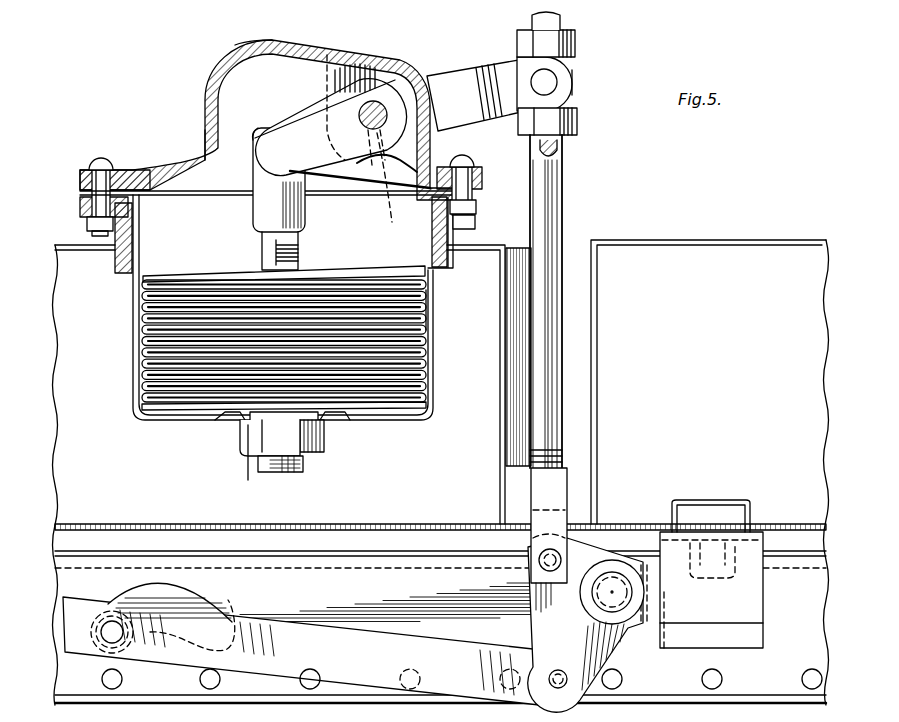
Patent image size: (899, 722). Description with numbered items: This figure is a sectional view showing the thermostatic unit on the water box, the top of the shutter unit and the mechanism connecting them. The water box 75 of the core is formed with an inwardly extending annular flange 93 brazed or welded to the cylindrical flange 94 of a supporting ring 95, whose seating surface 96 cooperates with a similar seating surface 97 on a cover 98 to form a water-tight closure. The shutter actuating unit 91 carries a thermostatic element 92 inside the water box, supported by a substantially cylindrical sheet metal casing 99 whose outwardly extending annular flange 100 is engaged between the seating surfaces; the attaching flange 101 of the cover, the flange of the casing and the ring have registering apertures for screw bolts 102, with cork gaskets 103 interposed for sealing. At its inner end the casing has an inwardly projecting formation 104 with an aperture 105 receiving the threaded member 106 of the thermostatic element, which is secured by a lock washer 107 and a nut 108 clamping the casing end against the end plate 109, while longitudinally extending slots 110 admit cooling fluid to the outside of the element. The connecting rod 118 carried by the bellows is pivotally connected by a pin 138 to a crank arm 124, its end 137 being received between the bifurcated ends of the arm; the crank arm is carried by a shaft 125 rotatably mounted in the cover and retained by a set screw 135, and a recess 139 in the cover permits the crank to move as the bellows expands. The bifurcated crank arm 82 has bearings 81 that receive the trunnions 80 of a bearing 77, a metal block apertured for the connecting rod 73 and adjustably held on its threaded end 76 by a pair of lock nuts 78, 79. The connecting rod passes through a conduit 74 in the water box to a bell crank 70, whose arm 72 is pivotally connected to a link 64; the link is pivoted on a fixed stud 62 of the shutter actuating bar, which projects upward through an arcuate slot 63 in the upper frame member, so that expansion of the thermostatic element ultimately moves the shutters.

The fixed stud 62 is at (112, 630).
The arcuate slot 63 is at (188, 593).
The link 64 is at (400, 645).
The bell crank 70 is at (566, 603).
The arm of bell crank 72 is at (590, 690).
The connecting rod 73 is at (562, 222).
The conduit 74 is at (610, 380).
The water box 75 is at (735, 240).
The threaded end 76 is at (557, 150).
The bearing 77 is at (574, 70).
The lock nut 78 is at (575, 45).
The lock nut 79 is at (577, 122).
The trunnions 80 is at (570, 88).
The bearings 81 is at (535, 74).
The bifurcated crank arm 82 is at (470, 78).
The shutter actuating unit 91 is at (206, 158).
The thermostatic element 92 is at (420, 350).
The annular flange 93 is at (447, 262).
The cylindrical flange 94 is at (470, 228).
The supporting ring 95 is at (476, 205).
The seating surface 96 is at (478, 176).
The seating surface 97 is at (466, 165).
The cover 98 is at (207, 104).
The casing 99 is at (136, 323).
The annular flange 100 is at (110, 186).
The attaching flange 101 is at (82, 183).
The screw bolts 102 is at (100, 160).
The gaskets 103 is at (84, 200).
The inwardly projecting formation 104 is at (232, 425).
The aperture 105 is at (270, 422).
The threaded member 106 is at (302, 470).
The lock washer 107 is at (324, 440).
The nut 108 is at (240, 450).
The end plate 109 is at (243, 464).
The longitudinally extending slots 110 is at (430, 318).
The connecting rod 118 is at (300, 218).
The crank arm 124 is at (318, 113).
The shaft 125 is at (373, 100).
The set screw 135 is at (391, 179).
The end of connecting rod 137 is at (252, 128).
The pin 138 is at (275, 145).
The recess 139 is at (240, 88).